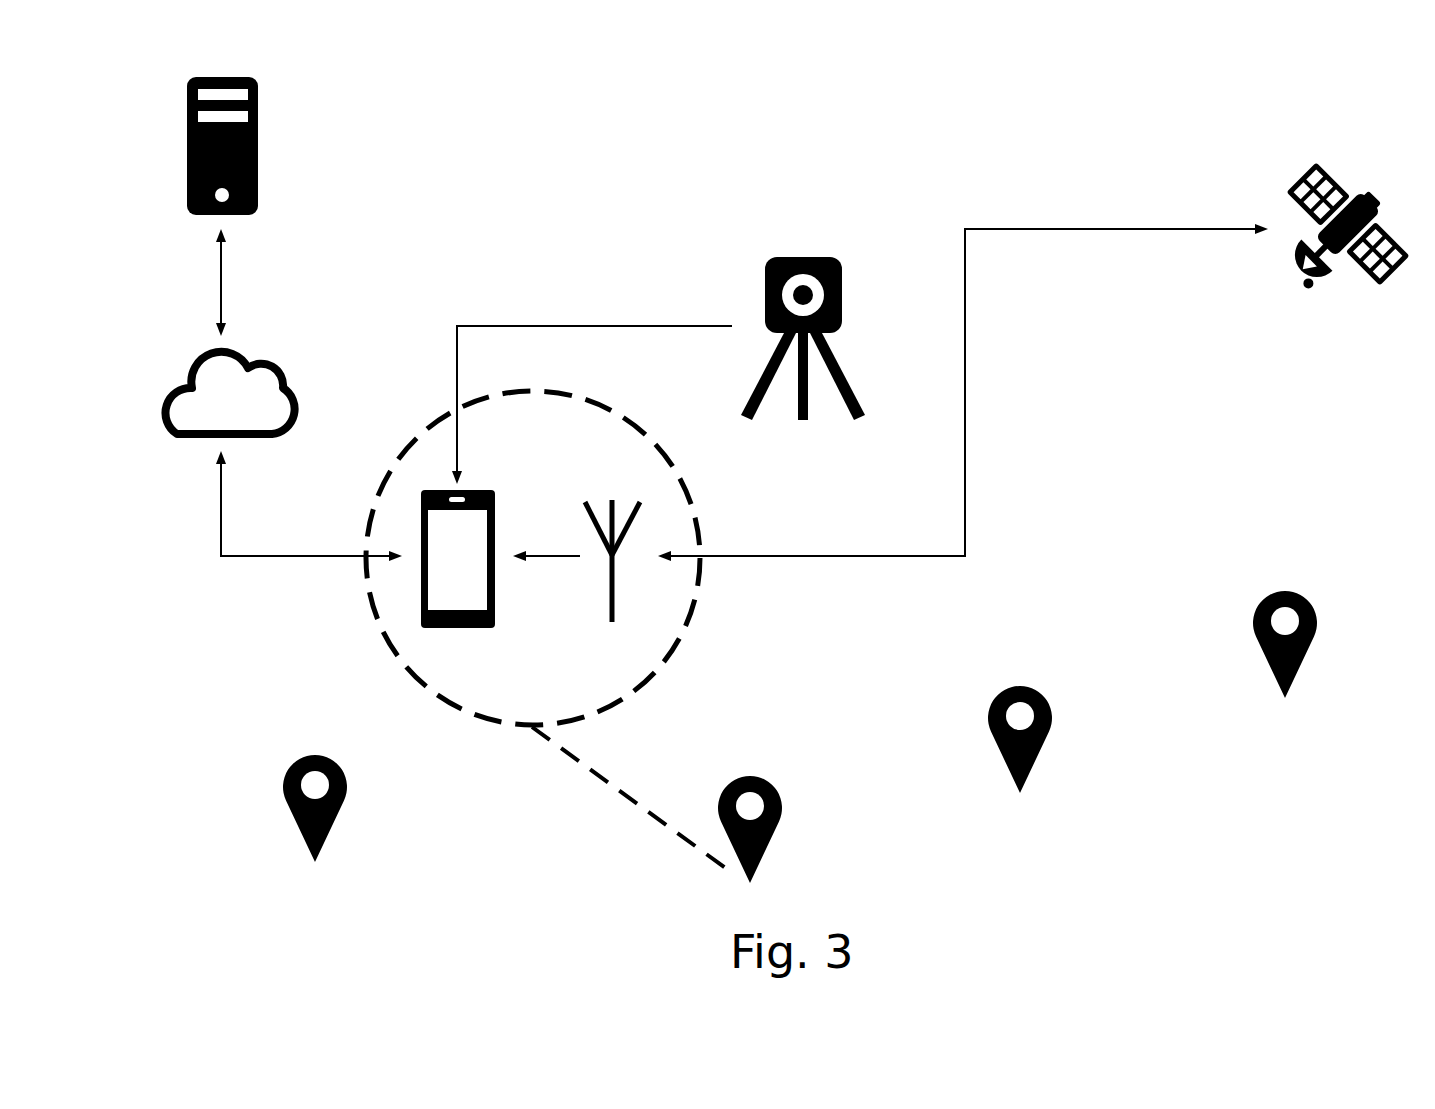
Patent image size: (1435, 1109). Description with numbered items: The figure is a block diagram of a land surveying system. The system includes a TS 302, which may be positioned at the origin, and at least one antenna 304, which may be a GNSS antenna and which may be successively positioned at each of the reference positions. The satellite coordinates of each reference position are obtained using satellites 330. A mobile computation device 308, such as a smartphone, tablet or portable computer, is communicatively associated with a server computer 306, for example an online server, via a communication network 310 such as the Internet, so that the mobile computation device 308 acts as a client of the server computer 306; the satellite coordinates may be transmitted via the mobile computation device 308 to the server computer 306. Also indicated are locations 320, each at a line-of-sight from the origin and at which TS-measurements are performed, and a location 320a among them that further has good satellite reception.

The TS 302 is at (803, 257).
The antenna 304 is at (615, 601).
The server computer 306 is at (258, 150).
The mobile computation device 308 is at (421, 601).
The communication network 310 is at (168, 378).
The locations 320 is at (315, 862).
The location 320a is at (752, 882).
The satellites 330 is at (1370, 190).